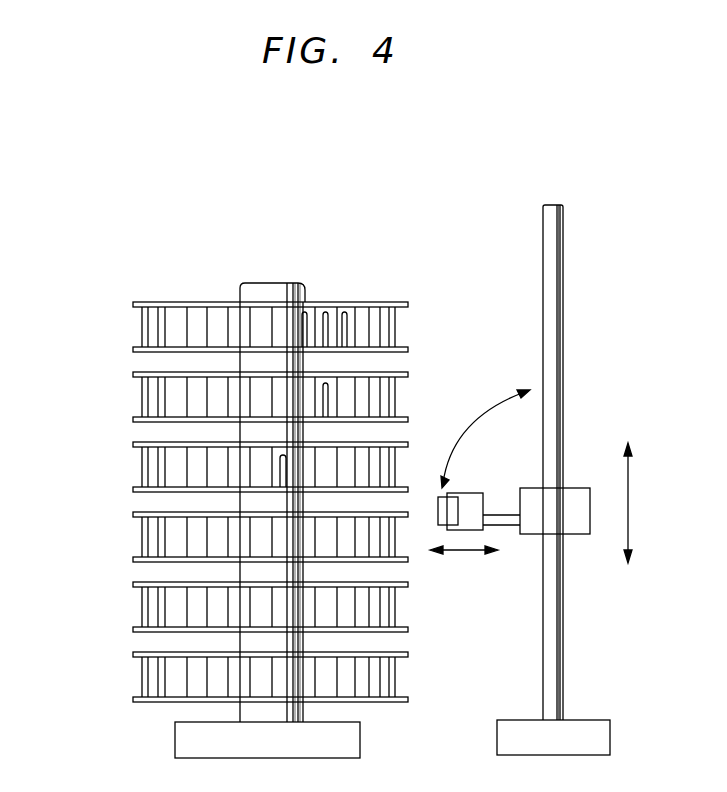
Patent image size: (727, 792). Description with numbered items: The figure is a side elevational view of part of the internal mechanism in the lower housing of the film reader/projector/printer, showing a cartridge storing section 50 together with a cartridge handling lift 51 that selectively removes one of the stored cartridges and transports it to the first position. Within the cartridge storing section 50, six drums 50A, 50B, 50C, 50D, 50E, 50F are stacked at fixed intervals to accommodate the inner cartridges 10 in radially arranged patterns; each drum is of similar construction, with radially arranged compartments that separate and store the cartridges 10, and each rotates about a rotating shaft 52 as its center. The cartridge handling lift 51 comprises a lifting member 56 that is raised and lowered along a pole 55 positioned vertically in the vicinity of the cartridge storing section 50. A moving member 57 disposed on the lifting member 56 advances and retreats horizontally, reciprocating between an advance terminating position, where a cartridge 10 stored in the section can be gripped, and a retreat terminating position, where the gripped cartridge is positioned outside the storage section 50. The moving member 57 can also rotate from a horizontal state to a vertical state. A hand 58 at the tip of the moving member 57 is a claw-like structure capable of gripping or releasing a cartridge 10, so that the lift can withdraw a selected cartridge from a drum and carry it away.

The cartridge 10 is at (345, 311).
The cartridge storing section 50 is at (127, 297).
The drum 50A is at (136, 338).
The drum 50B is at (131, 412).
The drum 50C is at (127, 487).
The drum 50D is at (130, 556).
The drum 50E is at (130, 627).
The drum 50F is at (130, 696).
The rotating shaft 52 is at (305, 707).
The cartridge handling lift 51 is at (582, 476).
The pole 55 is at (553, 312).
The lifting member 56 is at (580, 534).
The moving member 57 is at (478, 500).
The hand 58 is at (440, 512).